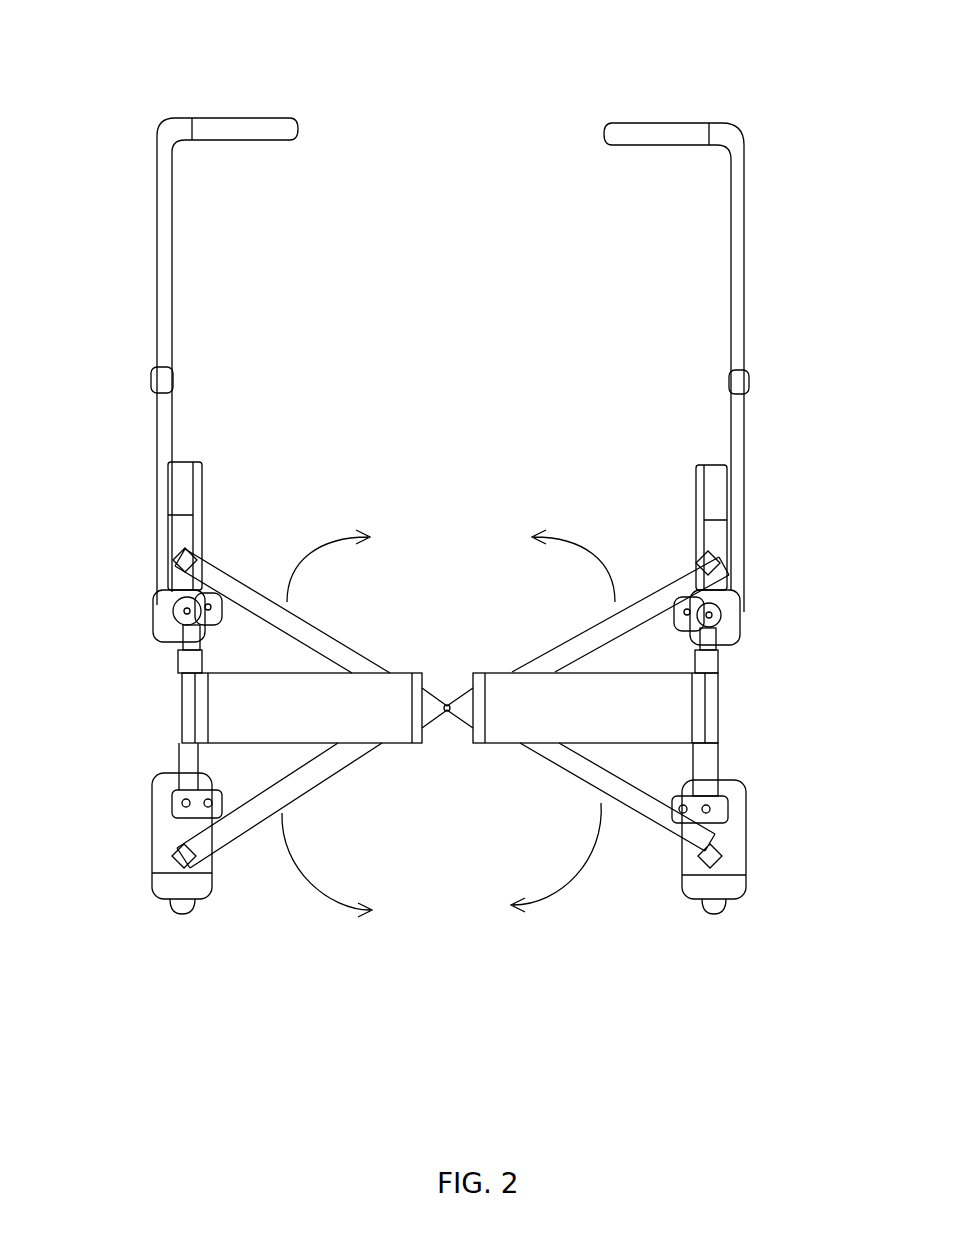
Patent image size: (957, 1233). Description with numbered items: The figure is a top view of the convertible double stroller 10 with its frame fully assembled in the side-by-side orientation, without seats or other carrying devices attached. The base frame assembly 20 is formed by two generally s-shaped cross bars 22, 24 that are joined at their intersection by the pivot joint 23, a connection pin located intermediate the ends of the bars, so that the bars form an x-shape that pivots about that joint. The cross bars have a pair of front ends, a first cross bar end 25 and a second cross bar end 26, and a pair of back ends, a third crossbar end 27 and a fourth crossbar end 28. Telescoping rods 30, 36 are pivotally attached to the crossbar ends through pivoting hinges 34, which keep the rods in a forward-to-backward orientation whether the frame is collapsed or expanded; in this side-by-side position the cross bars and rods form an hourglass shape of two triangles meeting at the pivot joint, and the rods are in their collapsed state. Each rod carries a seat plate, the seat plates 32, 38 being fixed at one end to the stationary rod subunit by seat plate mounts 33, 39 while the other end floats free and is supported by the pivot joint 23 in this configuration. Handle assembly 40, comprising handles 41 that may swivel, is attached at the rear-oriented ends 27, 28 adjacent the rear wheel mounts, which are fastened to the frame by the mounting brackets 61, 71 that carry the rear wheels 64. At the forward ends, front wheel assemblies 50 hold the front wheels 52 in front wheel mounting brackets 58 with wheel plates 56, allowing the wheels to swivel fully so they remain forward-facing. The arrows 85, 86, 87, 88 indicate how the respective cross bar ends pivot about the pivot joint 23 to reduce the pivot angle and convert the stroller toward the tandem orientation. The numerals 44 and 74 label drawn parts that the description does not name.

The convertible frame assembly for a double stroller 10 is at (135, 48).
The frame assembly 20 is at (724, 925).
The cross bar 22 is at (340, 780).
The pivot joint 23 is at (448, 700).
The cross bar 24 is at (327, 635).
The first cross bar end 25 is at (190, 853).
The second cross bar end 26 is at (693, 855).
The third crossbar end 27 is at (195, 563).
The fourth crossbar end 28 is at (700, 573).
The telescoping rod 30 is at (720, 760).
The seat plate 32 is at (527, 722).
The seat plate mount 33 is at (718, 703).
The pivoting hinge 34 is at (683, 598).
The telescoping rod 36 is at (180, 658).
The seat plate 38 is at (363, 725).
The seat plate mount 39 is at (182, 708).
The handle assembly 40 is at (152, 143).
The handle 41 is at (250, 118).
The upright tube 44 is at (166, 320).
The front wheel assembly 50 is at (800, 945).
The front wheel 52 is at (170, 900).
The wheel plate 56 is at (165, 857).
The front wheel mounting bracket 58 is at (185, 802).
The right wheel mounting bracket 61 is at (712, 618).
The wheel 64 is at (718, 465).
The mounting bracket 71 is at (188, 612).
The left connector 74 is at (190, 462).
The arrow 85 is at (322, 898).
The arrow 86 is at (548, 898).
The arrow 87 is at (335, 543).
The arrow 88 is at (588, 540).